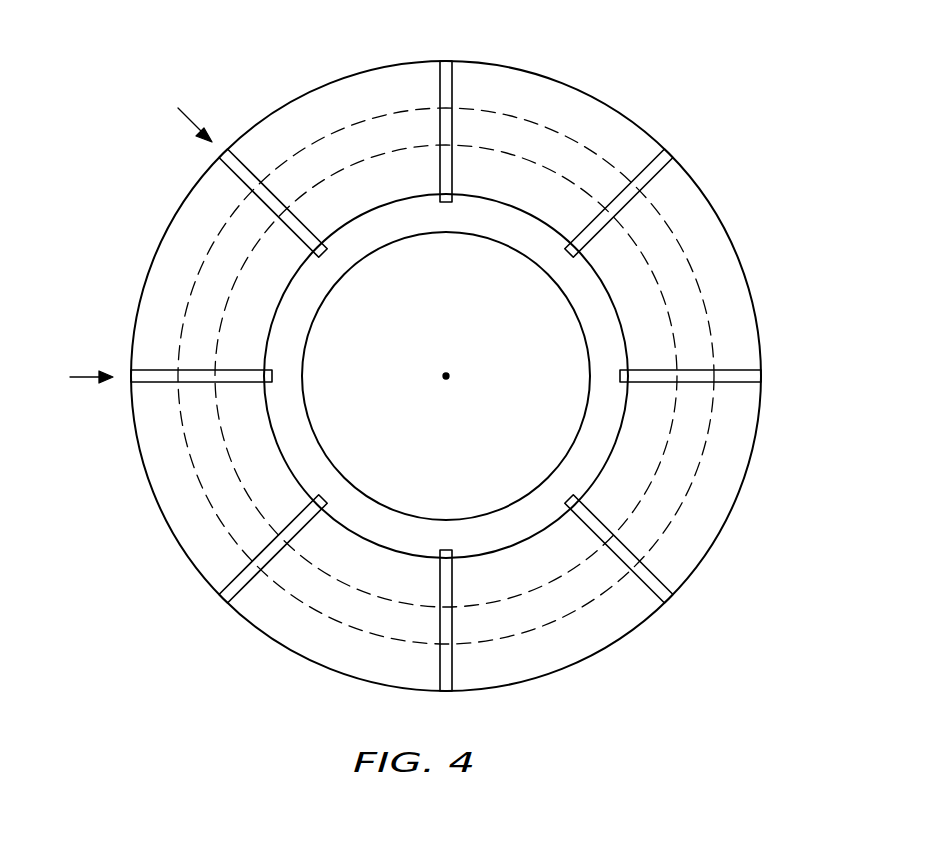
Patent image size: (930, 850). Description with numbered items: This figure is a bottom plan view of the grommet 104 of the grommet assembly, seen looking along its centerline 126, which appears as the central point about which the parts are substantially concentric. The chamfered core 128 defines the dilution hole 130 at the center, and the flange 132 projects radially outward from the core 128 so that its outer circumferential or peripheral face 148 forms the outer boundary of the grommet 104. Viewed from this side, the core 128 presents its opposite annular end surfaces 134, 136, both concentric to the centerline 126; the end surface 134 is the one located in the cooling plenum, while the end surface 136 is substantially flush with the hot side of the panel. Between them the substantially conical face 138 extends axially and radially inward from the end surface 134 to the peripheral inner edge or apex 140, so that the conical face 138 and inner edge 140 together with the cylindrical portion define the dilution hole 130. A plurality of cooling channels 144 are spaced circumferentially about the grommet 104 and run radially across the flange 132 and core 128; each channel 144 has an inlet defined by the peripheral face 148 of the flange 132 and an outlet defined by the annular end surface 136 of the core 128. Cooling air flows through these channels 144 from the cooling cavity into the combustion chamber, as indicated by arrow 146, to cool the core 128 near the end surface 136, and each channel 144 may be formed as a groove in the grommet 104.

The grommet 104 is at (442, 348).
The centerline 126 is at (448, 375).
The chamfered core 128 is at (305, 305).
The dilution hole 130 is at (468, 440).
The flange 132 is at (163, 472).
The annular end surface 134 is at (660, 243).
The annular end surface 136 is at (292, 402).
The conical face 138 is at (640, 312).
The inner edge 140 is at (405, 238).
The cooling channels 144 is at (447, 127).
The arrow 146 is at (198, 130).
The peripheral face 148 is at (616, 108).